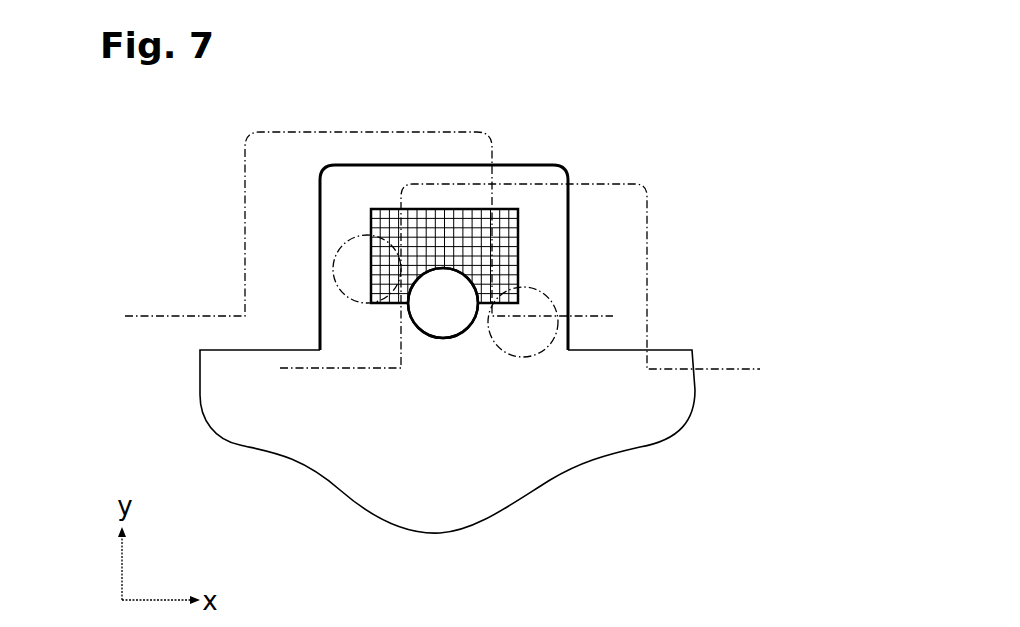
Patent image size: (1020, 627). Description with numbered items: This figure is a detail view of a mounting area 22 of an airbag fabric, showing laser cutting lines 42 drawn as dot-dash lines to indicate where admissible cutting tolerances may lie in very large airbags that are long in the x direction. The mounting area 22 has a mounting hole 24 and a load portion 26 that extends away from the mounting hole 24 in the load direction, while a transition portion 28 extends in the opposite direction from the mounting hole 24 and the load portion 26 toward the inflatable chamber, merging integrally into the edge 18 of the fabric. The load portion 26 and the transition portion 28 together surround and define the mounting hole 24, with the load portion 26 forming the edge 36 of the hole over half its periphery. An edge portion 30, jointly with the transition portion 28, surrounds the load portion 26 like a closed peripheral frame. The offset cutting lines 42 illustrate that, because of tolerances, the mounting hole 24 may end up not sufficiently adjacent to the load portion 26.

The edge 18 is at (260, 418).
The mounting area 22 is at (487, 315).
The mounting hole 24 is at (438, 292).
The load portion 26 is at (479, 230).
The transition portion 28 is at (433, 352).
The edge portion 30 is at (348, 187).
The edge of the mounting hole 36 is at (478, 303).
The laser cutting lines 42 is at (245, 187).